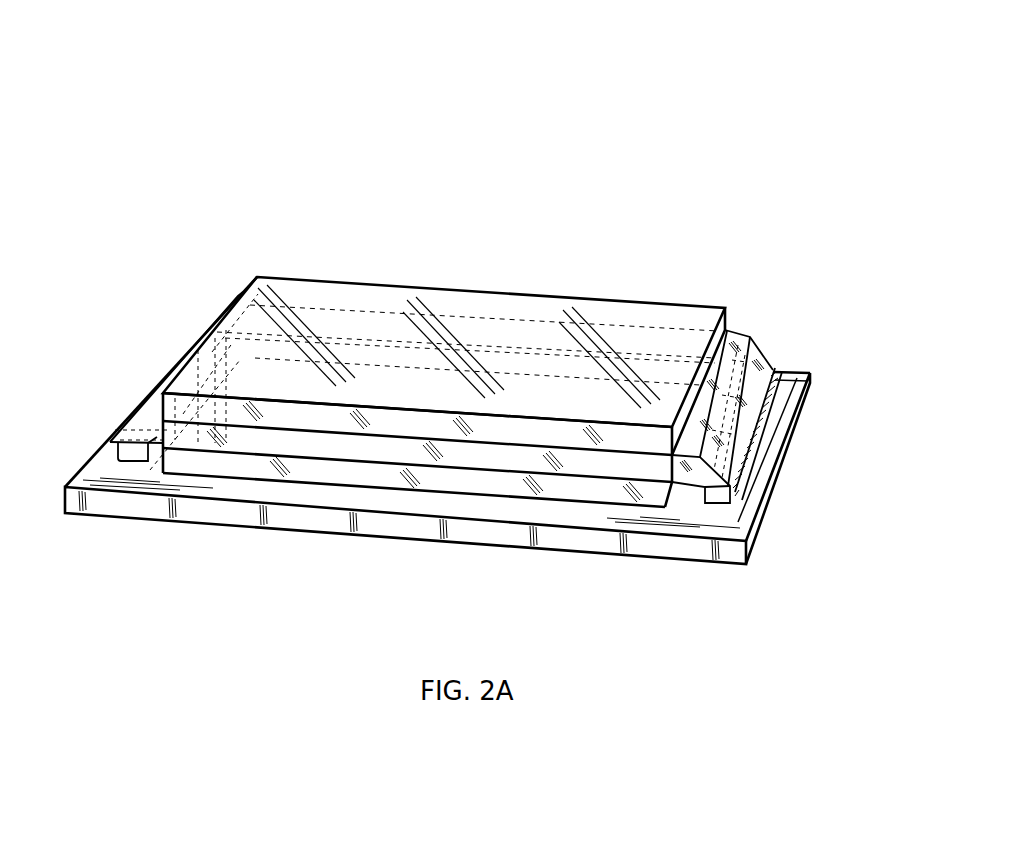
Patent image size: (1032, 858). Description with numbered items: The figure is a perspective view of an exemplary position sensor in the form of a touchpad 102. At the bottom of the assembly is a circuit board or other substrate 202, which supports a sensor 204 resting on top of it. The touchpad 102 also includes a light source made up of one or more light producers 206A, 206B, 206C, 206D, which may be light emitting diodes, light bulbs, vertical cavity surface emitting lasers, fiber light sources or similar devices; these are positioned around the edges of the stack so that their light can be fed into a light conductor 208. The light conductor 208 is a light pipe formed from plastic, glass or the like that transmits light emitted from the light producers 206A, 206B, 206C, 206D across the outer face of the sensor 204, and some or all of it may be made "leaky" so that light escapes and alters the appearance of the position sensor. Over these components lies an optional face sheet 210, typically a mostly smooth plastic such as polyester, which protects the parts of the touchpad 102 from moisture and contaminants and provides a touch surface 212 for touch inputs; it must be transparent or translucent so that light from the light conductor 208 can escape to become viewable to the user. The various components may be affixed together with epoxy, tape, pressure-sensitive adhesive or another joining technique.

The touchpad 102 is at (680, 138).
The substrate 202 is at (760, 539).
The sensor 204 is at (658, 493).
The light producer 206A is at (760, 450).
The light producer 206B is at (806, 384).
The light producer 206C is at (137, 390).
The light producer 206D is at (190, 342).
The light conductor 208 is at (763, 352).
The face sheet 210 is at (725, 315).
The touch surface 212 is at (368, 298).